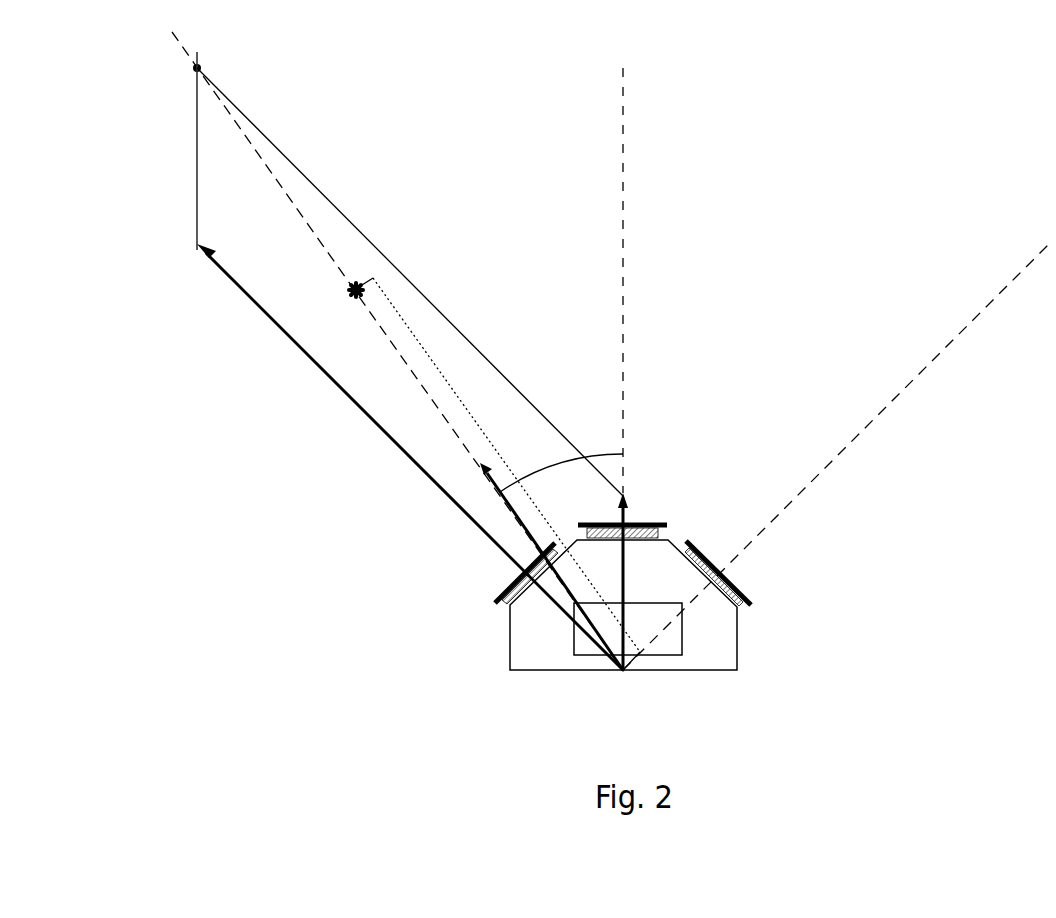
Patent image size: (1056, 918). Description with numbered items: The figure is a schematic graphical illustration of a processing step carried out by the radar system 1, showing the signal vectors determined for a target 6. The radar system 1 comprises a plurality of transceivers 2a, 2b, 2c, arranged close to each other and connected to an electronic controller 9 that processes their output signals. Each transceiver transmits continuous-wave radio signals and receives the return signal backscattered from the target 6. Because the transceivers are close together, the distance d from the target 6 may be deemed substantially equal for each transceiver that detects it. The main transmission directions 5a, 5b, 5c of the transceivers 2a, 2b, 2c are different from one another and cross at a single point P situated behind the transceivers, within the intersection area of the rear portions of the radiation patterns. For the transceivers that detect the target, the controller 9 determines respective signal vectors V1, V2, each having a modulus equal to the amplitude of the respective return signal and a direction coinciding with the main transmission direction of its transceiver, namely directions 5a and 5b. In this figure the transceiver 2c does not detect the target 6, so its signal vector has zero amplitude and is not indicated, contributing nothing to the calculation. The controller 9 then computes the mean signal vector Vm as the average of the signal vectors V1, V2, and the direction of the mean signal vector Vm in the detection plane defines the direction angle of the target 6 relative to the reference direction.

The radar system 1 is at (762, 665).
The transceiver 2a is at (495, 604).
The transceiver 2b is at (667, 525).
The transceiver 2c is at (748, 597).
The main transmission direction 5a is at (238, 250).
The main transmission direction 5b is at (623, 283).
The main transmission direction 5c is at (893, 397).
The target 6 is at (348, 291).
The electronic controller 9 is at (587, 655).
The point P is at (623, 670).
The distance d is at (502, 458).
The signal vector V1 is at (331, 378).
The signal vector V2 is at (625, 512).
The mean signal vector Vm is at (450, 519).